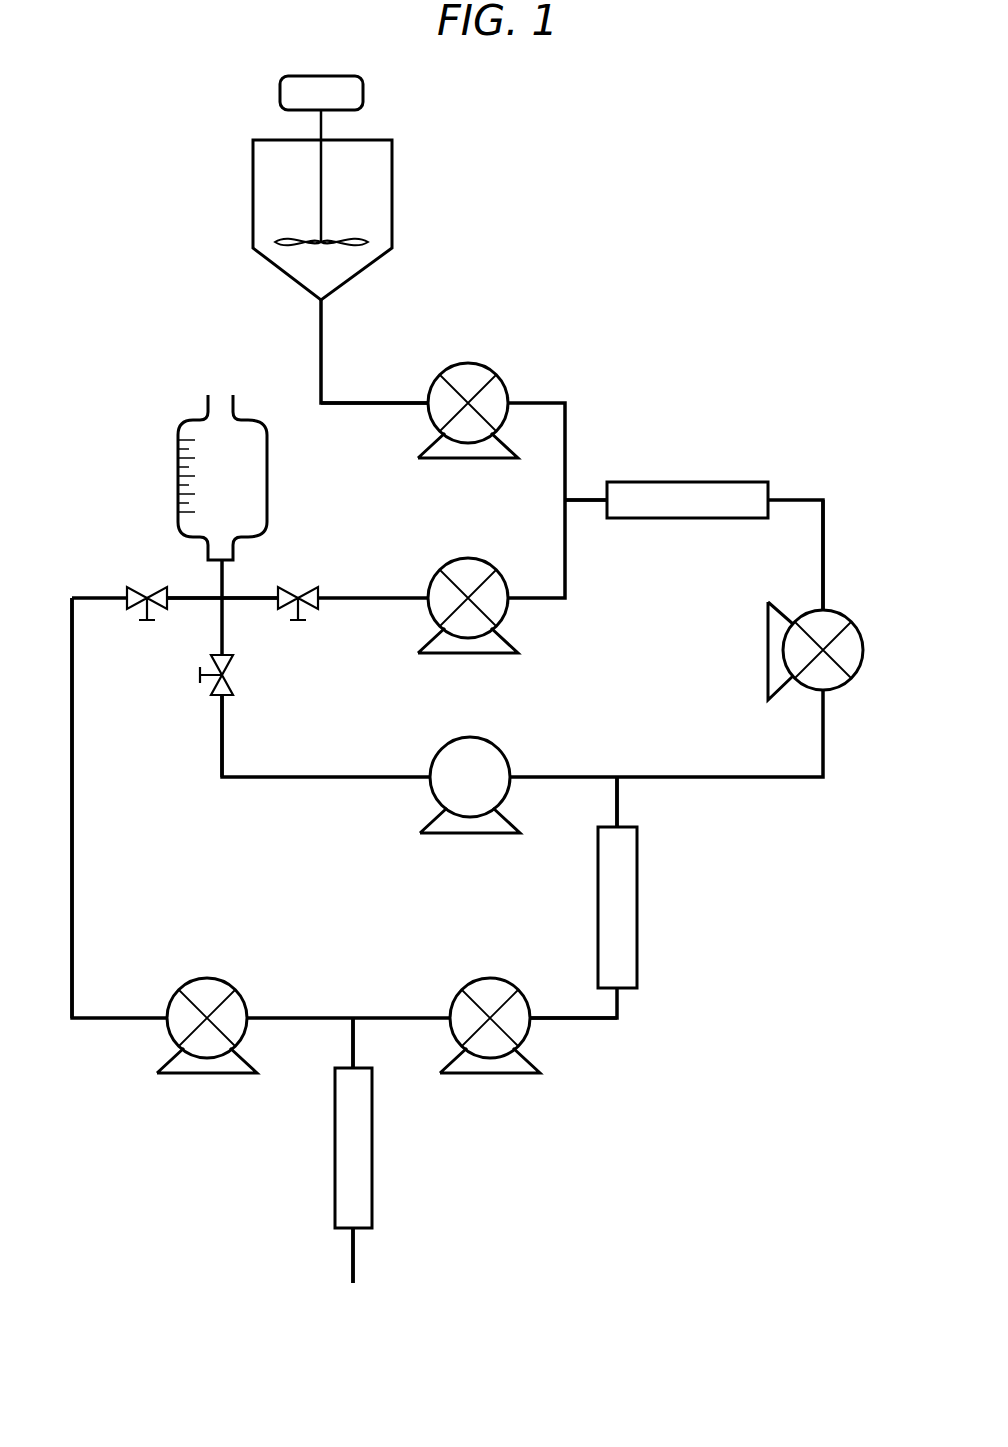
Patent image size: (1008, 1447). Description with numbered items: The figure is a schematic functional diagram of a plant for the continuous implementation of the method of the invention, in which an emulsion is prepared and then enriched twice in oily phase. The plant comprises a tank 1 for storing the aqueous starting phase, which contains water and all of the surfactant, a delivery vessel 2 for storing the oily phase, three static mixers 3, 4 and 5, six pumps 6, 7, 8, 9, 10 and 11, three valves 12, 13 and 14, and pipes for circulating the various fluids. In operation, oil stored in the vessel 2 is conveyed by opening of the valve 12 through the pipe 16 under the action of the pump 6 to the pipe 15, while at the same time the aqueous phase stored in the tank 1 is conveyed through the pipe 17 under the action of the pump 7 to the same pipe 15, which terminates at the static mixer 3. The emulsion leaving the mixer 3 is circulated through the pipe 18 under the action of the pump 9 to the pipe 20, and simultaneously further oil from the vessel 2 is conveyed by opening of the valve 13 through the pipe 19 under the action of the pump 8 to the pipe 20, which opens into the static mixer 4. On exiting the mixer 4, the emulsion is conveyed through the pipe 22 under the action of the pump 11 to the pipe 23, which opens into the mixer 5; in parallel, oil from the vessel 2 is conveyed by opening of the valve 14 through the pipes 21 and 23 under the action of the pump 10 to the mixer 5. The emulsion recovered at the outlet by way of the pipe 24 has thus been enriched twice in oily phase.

The tank 1 is at (392, 203).
The delivery vessel 2 is at (268, 477).
The static mixer 3 is at (677, 482).
The static mixer 4 is at (638, 915).
The static mixer 5 is at (373, 1155).
The pump 6 is at (490, 565).
The pump 7 is at (500, 385).
The pump 8 is at (492, 742).
The pump 9 is at (866, 640).
The pump 10 is at (228, 985).
The pump 11 is at (510, 985).
The valve 12 is at (290, 590).
The valve 13 is at (233, 690).
The valve 14 is at (135, 590).
The pipe 15 is at (585, 495).
The pipe 16 is at (235, 605).
The pipe 17 is at (374, 403).
The pipe 18 is at (825, 578).
The pipe 19 is at (222, 740).
The pipe 20 is at (620, 812).
The pipe 21 is at (73, 800).
The pipe 22 is at (565, 1022).
The pipe 23 is at (356, 1050).
The pipe 24 is at (356, 1268).